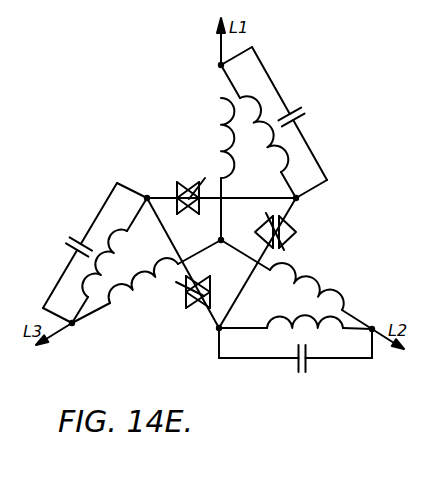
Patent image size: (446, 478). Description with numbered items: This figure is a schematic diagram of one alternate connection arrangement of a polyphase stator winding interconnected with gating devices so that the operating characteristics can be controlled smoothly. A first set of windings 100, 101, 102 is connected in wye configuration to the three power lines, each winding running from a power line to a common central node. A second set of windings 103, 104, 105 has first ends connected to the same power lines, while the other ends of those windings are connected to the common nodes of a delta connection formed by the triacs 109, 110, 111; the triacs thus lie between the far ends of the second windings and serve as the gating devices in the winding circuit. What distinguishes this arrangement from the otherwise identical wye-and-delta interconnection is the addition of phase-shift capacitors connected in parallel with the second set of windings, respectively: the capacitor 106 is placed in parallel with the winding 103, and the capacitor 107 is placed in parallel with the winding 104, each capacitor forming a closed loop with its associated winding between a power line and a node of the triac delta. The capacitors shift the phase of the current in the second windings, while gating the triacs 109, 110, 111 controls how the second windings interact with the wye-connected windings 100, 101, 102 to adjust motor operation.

The winding 100 is at (221, 120).
The winding 101 is at (312, 279).
The winding 102 is at (120, 300).
The winding 103 is at (278, 174).
The winding 104 is at (297, 314).
The winding 105 is at (116, 245).
The phase-shift capacitor 106 is at (303, 112).
The phase-shift capacitor 107 is at (305, 372).
The triac 109 is at (198, 312).
The triac 110 is at (184, 181).
The triac 111 is at (292, 226).